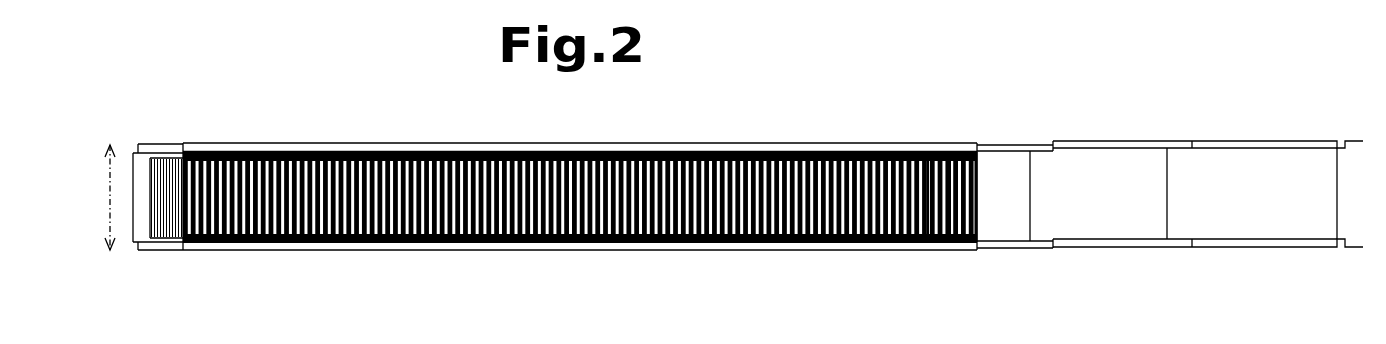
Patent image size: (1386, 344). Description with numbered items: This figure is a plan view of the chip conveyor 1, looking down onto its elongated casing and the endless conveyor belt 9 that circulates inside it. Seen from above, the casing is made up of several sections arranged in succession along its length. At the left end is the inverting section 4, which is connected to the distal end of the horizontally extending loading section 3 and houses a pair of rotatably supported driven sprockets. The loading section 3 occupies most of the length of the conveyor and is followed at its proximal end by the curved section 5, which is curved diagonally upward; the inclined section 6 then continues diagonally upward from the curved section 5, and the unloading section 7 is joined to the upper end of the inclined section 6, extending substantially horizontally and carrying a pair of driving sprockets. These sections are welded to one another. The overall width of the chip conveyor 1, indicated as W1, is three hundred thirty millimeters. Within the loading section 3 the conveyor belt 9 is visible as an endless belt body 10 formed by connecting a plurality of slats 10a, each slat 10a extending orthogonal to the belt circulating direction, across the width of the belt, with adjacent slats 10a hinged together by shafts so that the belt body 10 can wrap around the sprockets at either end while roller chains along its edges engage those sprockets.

The chip conveyor 1 is at (804, 128).
The loading section 3 is at (569, 252).
The inverting section 4 is at (136, 167).
The curved section 5 is at (1003, 249).
The inclined section 6 is at (1118, 249).
The unloading section 7 is at (1270, 248).
The conveyor belt 9 is at (981, 184).
The belt body 10 is at (700, 153).
The slat 10a is at (949, 152).
The width of chip conveyor W1 is at (110, 200).